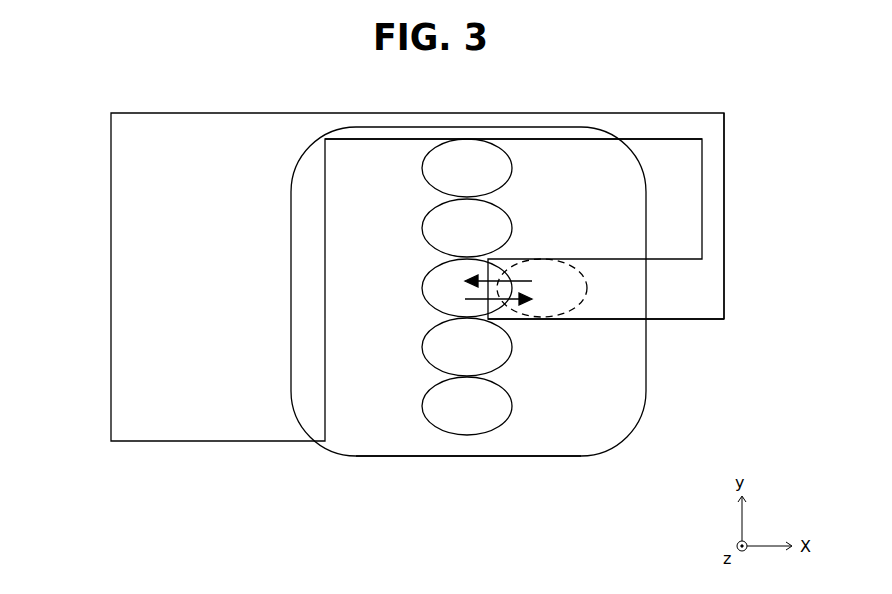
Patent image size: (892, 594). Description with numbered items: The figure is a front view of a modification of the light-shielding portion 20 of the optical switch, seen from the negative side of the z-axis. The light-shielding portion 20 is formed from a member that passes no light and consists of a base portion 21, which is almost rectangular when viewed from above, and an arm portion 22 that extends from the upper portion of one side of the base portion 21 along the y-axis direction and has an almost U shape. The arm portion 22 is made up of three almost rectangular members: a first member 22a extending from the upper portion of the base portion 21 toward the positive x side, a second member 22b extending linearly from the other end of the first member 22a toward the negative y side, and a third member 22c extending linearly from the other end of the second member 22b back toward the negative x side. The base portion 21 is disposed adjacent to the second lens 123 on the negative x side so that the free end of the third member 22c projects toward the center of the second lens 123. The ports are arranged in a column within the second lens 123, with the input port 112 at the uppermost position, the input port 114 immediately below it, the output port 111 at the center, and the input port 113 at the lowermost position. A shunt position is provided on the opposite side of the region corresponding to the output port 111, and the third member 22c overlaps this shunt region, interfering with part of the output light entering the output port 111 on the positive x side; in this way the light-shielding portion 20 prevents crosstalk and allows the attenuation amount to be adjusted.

The light-shielding portion 20 is at (395, 258).
The base portion 21 is at (112, 278).
The arm portion 22 is at (462, 112).
The first member 22a is at (614, 112).
The second member 22b is at (725, 205).
The third member 22c is at (667, 320).
The output port 111 is at (422, 288).
The input port 112 is at (422, 167).
The input port 113 is at (422, 406).
The input port 114 is at (422, 228).
The second lens 123 is at (462, 457).